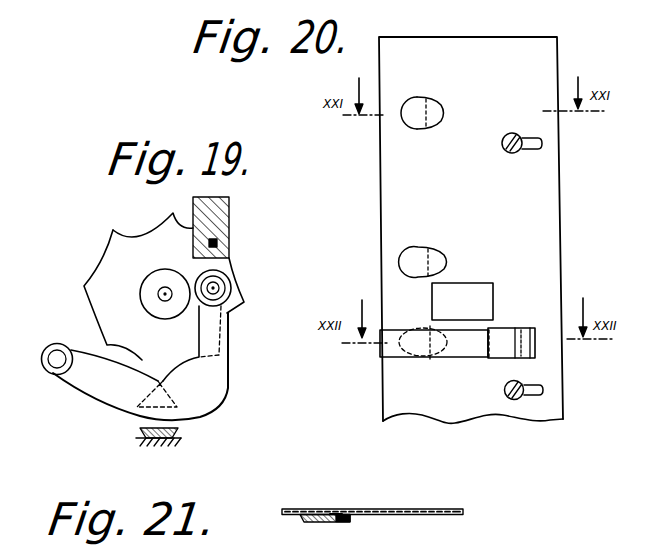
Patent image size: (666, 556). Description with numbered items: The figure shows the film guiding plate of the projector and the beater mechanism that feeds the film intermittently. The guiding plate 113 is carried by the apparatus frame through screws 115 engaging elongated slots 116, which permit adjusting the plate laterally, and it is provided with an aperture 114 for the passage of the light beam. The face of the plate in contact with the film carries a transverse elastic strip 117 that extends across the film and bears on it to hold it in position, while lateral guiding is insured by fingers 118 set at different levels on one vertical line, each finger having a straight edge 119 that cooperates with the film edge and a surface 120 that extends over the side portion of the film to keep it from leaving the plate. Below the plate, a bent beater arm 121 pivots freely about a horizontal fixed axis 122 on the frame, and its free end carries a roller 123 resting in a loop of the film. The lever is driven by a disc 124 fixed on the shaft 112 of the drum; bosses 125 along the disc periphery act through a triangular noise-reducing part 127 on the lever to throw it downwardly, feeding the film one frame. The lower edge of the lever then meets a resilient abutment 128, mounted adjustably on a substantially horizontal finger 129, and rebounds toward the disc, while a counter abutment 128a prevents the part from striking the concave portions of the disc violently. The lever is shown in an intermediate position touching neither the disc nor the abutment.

In FIG. 19, the shaft 112 is at (165, 294).
In FIG. 20, the guiding plate 113 is at (540, 67).
In FIG. 21, the guiding plate 113 is at (422, 495).
In FIG. 20, the aperture 114 is at (494, 298).
In FIG. 20, the screws 115 is at (520, 127).
In FIG. 20, the elongated slots 116 is at (543, 145).
In FIG. 20, the transverse elastic strip 117 is at (480, 347).
In FIG. 20, the fingers 118 is at (415, 122).
In FIG. 21, the fingers 118 is at (313, 518).
In FIG. 20, the straight edge 119 is at (453, 92).
In FIG. 21, the straight edge 119 is at (357, 493).
In FIG. 20, the surface 120 is at (444, 114).
In FIG. 21, the surface 120 is at (360, 533).
In FIG. 19, the beater arm 121 is at (218, 382).
In FIG. 19, the horizontal fixed axis 122 is at (56, 363).
In FIG. 19, the roller 123 is at (216, 288).
In FIG. 19, the disc 124 is at (163, 233).
In FIG. 19, the bosses 125 is at (217, 242).
In FIG. 19, the triangular part 127 is at (158, 381).
In FIG. 19, the abutment 128 is at (143, 430).
In FIG. 19, the counter abutment 128a is at (230, 211).
In FIG. 19, the horizontal finger 129 is at (160, 443).